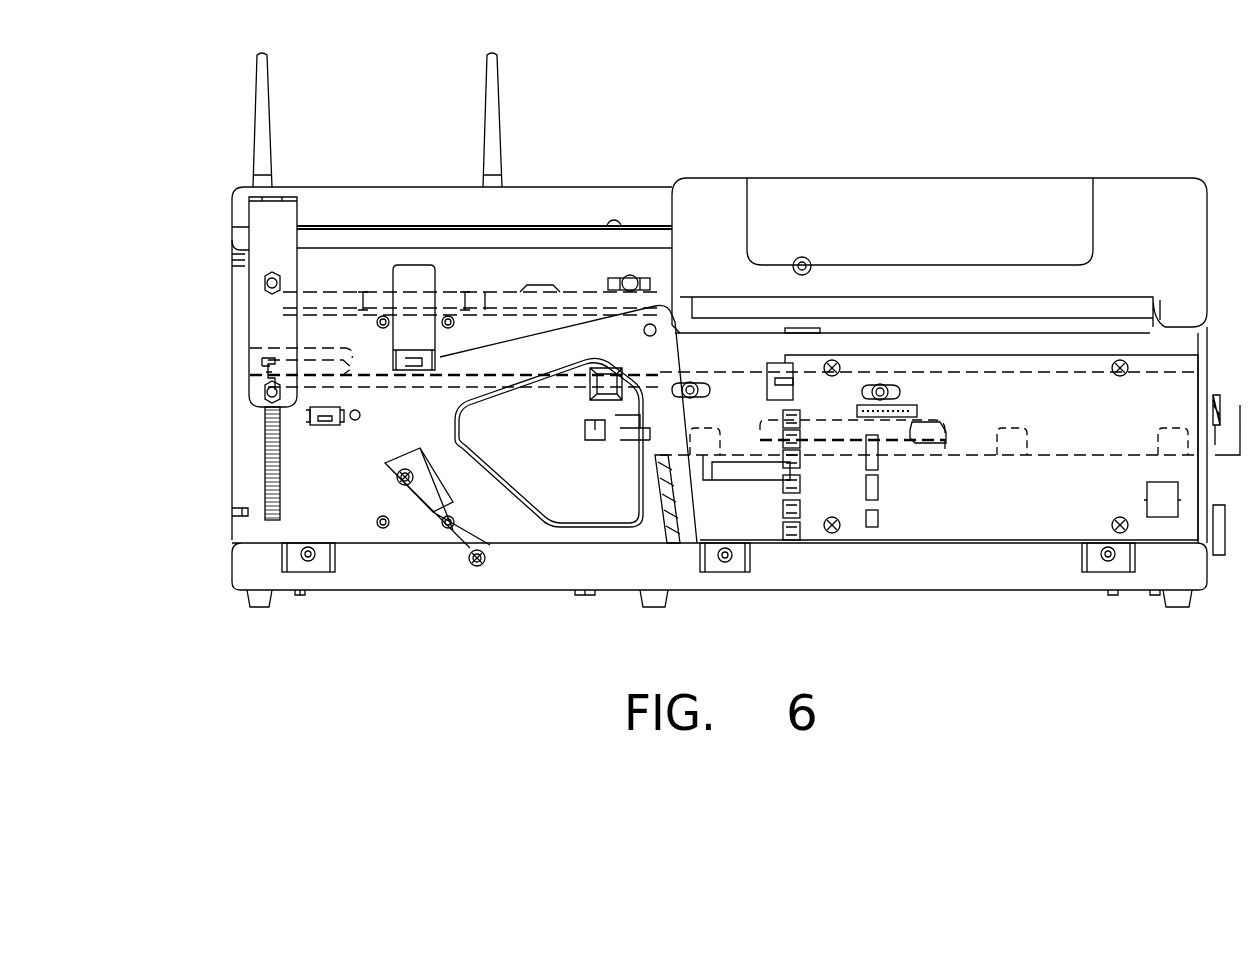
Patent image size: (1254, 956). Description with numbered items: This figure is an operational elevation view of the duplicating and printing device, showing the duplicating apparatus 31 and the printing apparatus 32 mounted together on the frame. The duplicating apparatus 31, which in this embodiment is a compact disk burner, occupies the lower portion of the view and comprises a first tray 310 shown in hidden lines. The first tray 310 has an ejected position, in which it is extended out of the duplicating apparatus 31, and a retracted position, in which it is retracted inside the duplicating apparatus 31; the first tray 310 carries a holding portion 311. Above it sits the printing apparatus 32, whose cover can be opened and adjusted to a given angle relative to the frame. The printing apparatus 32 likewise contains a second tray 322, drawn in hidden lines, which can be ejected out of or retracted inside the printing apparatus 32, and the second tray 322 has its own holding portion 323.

The duplicating apparatus 31 is at (975, 466).
The printing apparatus 32 is at (913, 172).
The first tray 310 is at (368, 387).
The holding portion 311 is at (346, 348).
The second tray 322 is at (582, 300).
The holding portion 323 is at (328, 292).